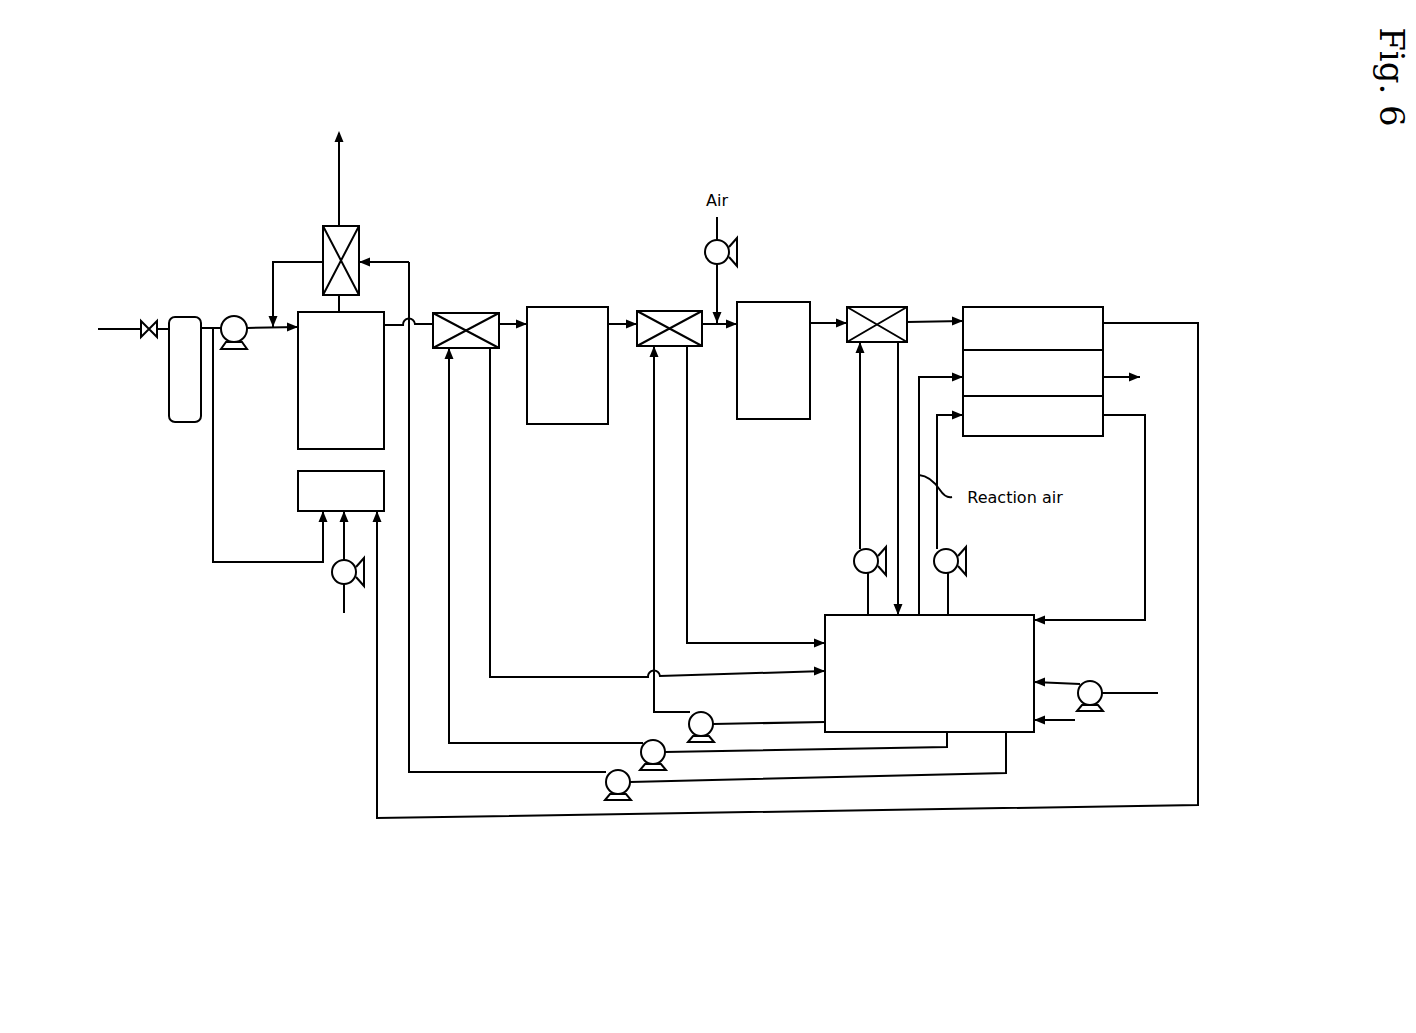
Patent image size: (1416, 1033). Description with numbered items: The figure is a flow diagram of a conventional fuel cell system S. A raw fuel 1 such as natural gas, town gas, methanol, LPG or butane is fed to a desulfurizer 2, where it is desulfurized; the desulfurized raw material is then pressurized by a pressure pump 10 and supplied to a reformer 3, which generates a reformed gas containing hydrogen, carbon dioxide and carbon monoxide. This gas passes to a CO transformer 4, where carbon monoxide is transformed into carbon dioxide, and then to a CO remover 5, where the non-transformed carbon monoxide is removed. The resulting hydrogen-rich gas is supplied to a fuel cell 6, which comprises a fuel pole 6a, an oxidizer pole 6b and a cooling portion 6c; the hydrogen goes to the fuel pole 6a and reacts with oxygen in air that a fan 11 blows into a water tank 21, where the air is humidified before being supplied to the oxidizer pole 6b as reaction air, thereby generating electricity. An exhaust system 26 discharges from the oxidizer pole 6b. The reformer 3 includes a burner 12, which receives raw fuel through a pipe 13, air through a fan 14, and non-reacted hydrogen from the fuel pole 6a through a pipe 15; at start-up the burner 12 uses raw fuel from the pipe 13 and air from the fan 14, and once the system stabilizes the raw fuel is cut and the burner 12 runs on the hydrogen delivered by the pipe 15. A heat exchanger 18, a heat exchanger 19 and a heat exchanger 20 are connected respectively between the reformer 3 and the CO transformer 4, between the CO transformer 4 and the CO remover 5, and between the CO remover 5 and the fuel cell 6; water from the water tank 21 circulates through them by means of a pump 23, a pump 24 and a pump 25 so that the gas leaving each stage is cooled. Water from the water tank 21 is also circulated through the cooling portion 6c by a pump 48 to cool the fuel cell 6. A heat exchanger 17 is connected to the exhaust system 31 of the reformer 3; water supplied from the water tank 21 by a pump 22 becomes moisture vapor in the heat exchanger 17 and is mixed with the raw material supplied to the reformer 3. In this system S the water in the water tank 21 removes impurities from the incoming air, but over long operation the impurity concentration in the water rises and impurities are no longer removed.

The conventional fuel cell system S is at (220, 194).
The raw fuel 1 is at (98, 329).
The desulfurizer 2 is at (168, 392).
The reformer 3 is at (298, 413).
The CO transformer 4 is at (566, 424).
The CO remover 5 is at (772, 419).
The fuel cell 6 is at (1042, 447).
The fuel pole 6a is at (985, 315).
The oxidizer pole 6b is at (976, 368).
The cooling portion 6c is at (982, 433).
The pressure pump 10 is at (236, 316).
The fan 11 is at (1099, 701).
The burner 12 is at (298, 497).
The pipe 13 is at (213, 497).
The fan 14 is at (333, 578).
The pipe 15 is at (377, 792).
The heat exchanger 17 is at (322, 243).
The heat exchanger 18 is at (466, 313).
The heat exchanger 19 is at (659, 311).
The heat exchanger 20 is at (870, 307).
The water tank 21 is at (838, 614).
The pump 22 is at (607, 781).
The pump 23 is at (652, 740).
The pump 24 is at (708, 714).
The pump 25 is at (860, 571).
The exhaust system 26 is at (1118, 372).
The exhaust system 31 is at (342, 187).
The pump 48 is at (957, 548).